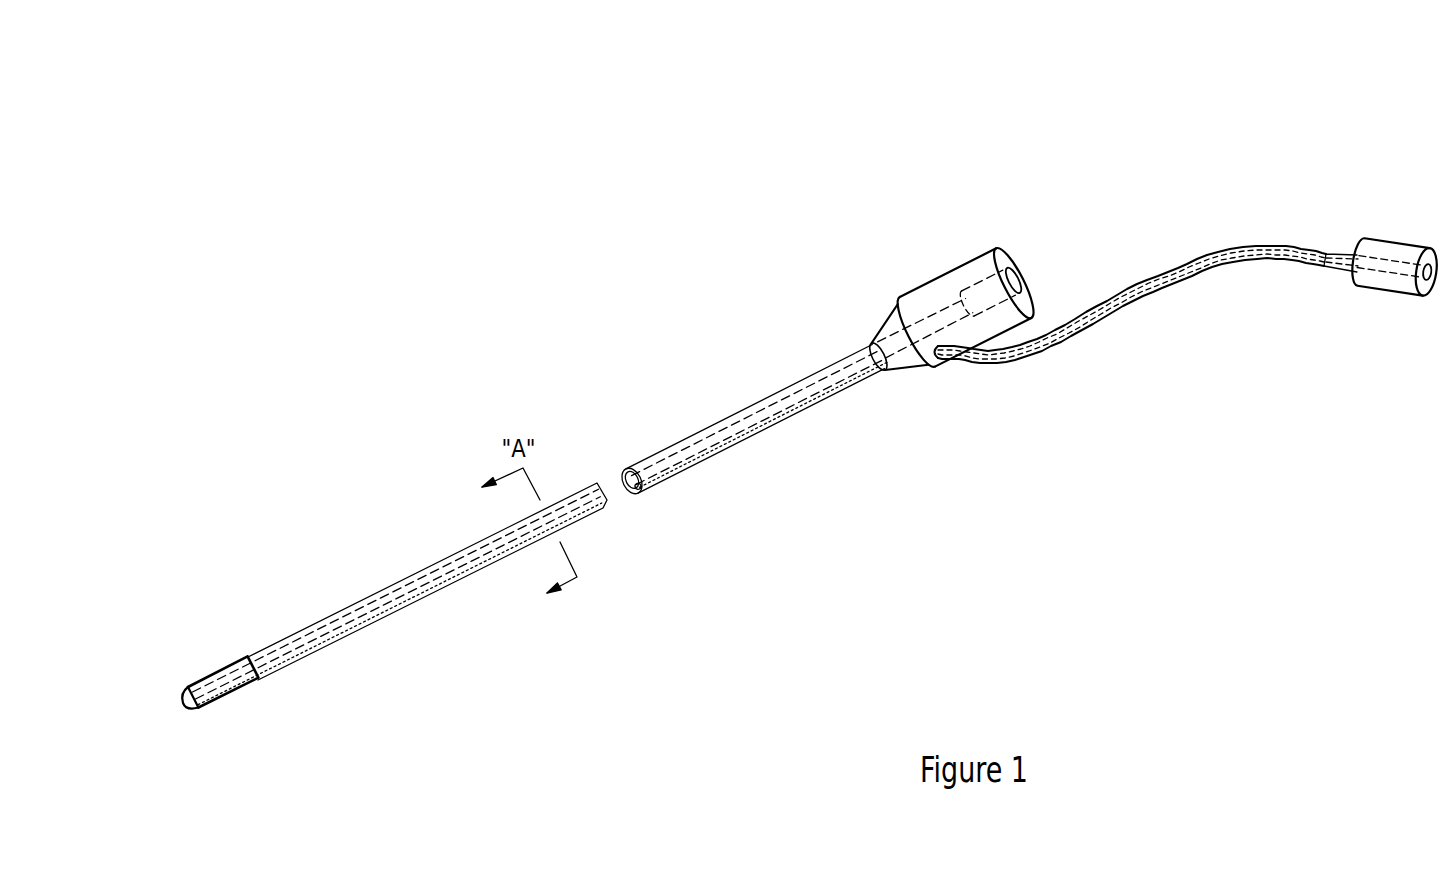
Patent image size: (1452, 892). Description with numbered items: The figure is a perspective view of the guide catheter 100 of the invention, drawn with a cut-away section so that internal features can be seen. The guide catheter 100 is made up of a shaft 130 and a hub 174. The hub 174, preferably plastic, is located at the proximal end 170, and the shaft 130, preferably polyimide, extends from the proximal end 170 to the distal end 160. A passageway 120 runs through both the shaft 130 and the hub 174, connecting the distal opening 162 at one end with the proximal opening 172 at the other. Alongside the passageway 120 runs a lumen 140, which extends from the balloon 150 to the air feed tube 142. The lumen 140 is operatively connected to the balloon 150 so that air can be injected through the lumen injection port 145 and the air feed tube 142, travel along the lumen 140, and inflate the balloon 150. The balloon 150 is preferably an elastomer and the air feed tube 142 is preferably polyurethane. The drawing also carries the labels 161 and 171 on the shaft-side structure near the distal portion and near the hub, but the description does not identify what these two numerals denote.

The guide catheter 100 is at (790, 562).
The passageway 120 is at (623, 470).
The shaft 130 is at (713, 415).
The lumen 140 is at (635, 497).
The air feed tube 142 is at (1082, 343).
The lumen injection port 145 is at (1420, 240).
The balloon 150 is at (213, 655).
The distal end 160 is at (188, 717).
The stylet rod 161 is at (412, 570).
The distal opening 162 is at (175, 707).
The proximal end 170 is at (1015, 253).
The tapered collar 171 is at (867, 330).
The proximal opening 172 is at (1025, 277).
The hub 174 is at (916, 282).